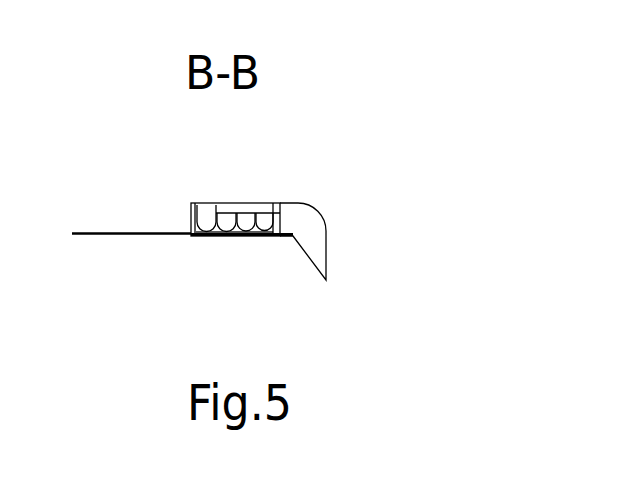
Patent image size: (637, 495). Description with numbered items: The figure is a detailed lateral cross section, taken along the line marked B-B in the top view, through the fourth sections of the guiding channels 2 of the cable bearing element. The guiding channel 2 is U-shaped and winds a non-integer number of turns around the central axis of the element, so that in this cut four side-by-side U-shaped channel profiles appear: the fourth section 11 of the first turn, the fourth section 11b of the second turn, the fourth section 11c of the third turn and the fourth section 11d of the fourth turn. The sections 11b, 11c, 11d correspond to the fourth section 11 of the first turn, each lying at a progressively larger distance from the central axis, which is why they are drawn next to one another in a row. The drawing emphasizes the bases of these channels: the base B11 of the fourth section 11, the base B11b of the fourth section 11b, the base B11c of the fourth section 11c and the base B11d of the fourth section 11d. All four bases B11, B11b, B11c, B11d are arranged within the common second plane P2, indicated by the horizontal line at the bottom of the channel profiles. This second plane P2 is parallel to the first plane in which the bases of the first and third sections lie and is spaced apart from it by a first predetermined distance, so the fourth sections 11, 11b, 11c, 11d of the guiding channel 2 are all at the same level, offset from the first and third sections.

The guiding channel 2 is at (266, 215).
The fourth section 11 is at (272, 237).
The fourth section of second turn 11b is at (247, 215).
The fourth section of third turn 11c is at (223, 215).
The fourth section of fourth turn 11d is at (197, 205).
The base of fourth section B11 is at (263, 237).
The base of fourth section of second turn B11b is at (242, 237).
The base of fourth section of third turn B11c is at (220, 237).
The base of fourth section of fourth turn B11d is at (202, 237).
The second plane P2 is at (105, 233).